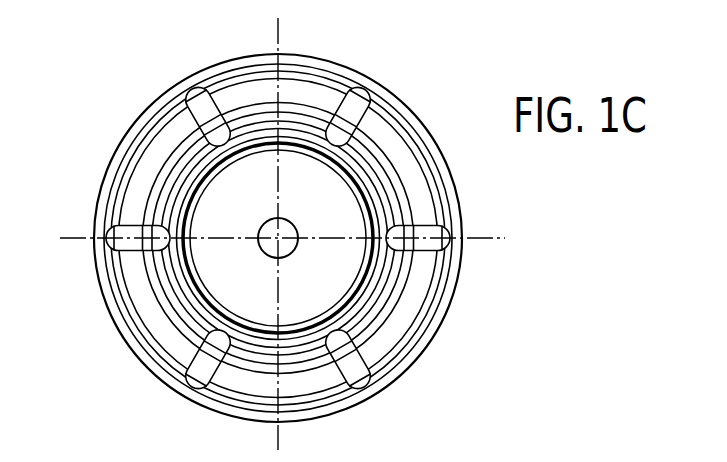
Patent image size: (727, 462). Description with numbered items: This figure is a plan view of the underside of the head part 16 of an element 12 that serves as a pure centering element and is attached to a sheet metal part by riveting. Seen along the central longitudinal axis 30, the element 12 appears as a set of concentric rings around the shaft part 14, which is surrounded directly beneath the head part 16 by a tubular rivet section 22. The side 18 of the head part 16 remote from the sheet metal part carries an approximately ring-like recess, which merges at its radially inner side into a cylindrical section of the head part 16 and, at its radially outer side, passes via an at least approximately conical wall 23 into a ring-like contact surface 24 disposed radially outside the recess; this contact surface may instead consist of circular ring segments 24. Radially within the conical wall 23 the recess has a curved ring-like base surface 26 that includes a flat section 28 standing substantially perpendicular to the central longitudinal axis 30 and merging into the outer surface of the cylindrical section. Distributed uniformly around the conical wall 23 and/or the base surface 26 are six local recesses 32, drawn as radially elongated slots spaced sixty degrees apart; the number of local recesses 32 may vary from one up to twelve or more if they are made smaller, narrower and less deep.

The element 12 is at (374, 201).
The shaft part 14 is at (312, 342).
The head part 16 is at (412, 107).
The side 18 is at (443, 204).
The tubular rivet section 22 is at (265, 342).
The conical wall 23 is at (390, 333).
The ring-like contact surface 24 is at (146, 343).
The base surface 26 is at (162, 287).
The flat section 28 is at (380, 167).
The central longitudinal axis 30 is at (288, 221).
The local recess 32 is at (190, 95).